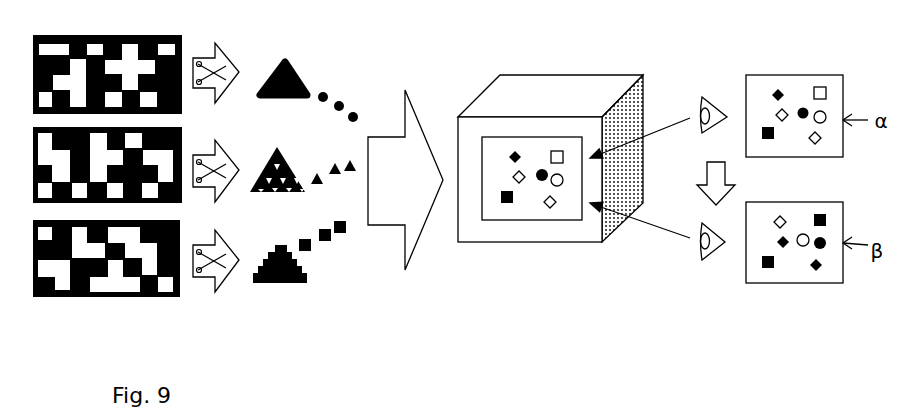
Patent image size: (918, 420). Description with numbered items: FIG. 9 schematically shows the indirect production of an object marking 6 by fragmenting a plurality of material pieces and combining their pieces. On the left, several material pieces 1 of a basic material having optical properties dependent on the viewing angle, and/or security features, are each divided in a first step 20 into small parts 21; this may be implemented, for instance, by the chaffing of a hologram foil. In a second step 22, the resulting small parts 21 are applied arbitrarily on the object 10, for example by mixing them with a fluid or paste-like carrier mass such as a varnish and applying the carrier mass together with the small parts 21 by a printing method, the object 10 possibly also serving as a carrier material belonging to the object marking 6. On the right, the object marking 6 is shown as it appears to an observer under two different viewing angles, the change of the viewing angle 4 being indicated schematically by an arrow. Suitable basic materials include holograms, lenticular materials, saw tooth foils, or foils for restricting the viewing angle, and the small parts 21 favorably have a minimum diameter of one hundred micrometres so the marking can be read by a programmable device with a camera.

The material piece 1 is at (113, 280).
The first step 20 is at (217, 280).
The small parts 21 is at (278, 282).
The second step 22 is at (407, 260).
The object 10 is at (485, 233).
The object marking 6 is at (548, 212).
The change of the viewing angle 4 is at (715, 178).